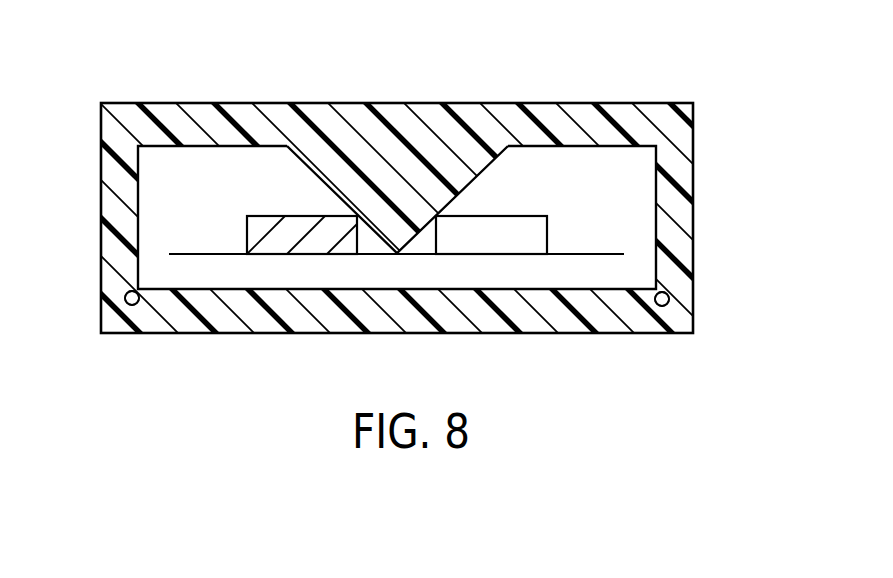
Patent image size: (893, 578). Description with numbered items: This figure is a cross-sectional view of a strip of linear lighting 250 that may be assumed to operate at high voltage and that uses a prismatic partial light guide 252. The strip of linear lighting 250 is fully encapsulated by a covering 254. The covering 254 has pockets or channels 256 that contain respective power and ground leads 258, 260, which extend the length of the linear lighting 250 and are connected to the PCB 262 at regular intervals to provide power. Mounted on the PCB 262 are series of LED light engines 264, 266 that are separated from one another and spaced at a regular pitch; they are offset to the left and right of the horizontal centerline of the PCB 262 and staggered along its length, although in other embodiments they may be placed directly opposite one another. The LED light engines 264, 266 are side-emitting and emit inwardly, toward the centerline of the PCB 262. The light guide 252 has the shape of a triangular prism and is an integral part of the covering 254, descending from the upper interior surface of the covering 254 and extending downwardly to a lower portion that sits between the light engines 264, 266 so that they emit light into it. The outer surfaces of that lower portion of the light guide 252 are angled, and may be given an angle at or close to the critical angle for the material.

The strip of linear lighting 250 is at (446, 199).
The prismatic partial light guide 252 is at (457, 178).
The covering 254 is at (687, 153).
The pockets or channels 256 is at (140, 306).
The power lead 258 is at (127, 296).
The ground lead 260 is at (669, 297).
The PCB 262 is at (216, 253).
The LED light engine 264 is at (300, 221).
The LED light engine 266 is at (532, 228).